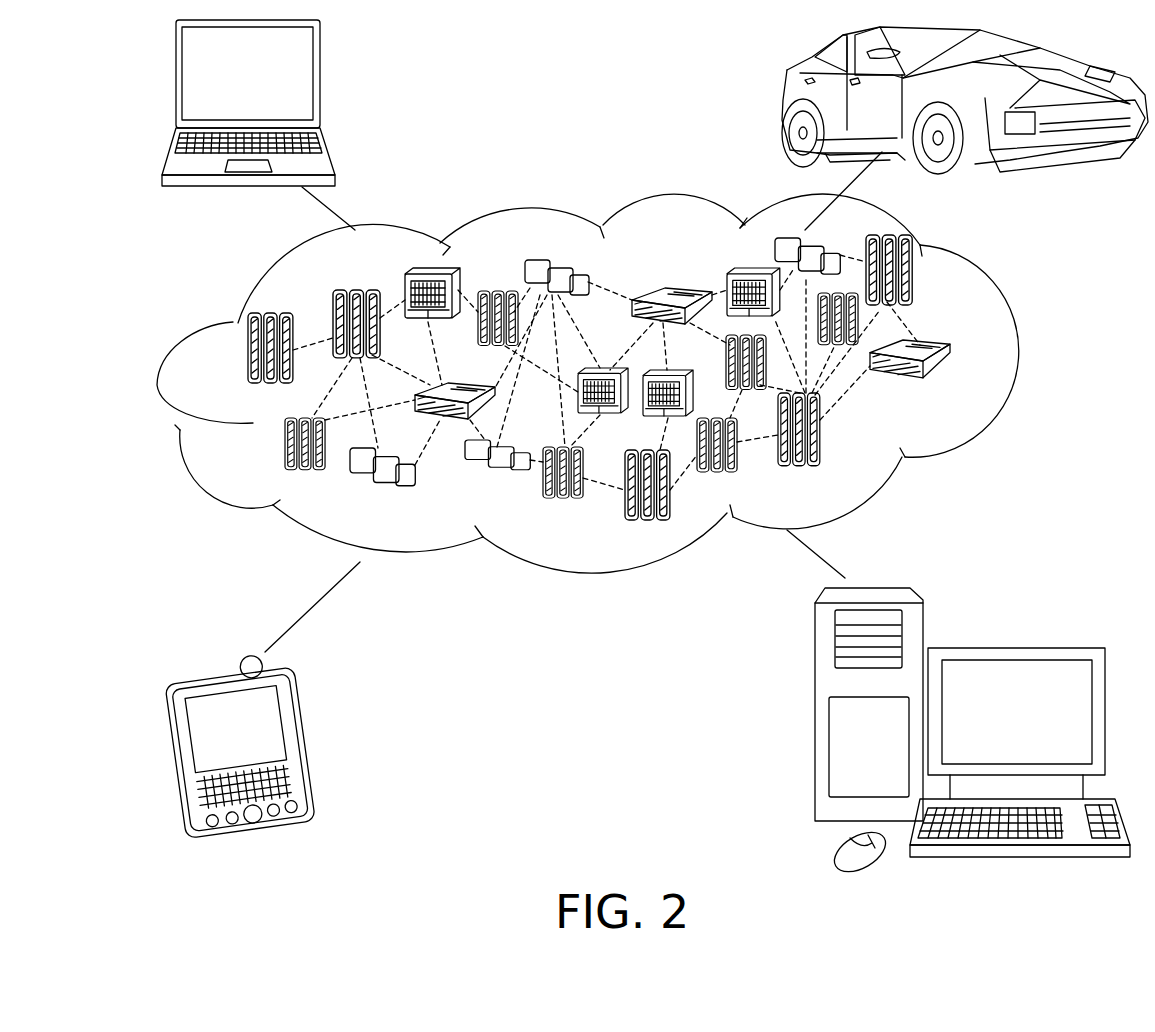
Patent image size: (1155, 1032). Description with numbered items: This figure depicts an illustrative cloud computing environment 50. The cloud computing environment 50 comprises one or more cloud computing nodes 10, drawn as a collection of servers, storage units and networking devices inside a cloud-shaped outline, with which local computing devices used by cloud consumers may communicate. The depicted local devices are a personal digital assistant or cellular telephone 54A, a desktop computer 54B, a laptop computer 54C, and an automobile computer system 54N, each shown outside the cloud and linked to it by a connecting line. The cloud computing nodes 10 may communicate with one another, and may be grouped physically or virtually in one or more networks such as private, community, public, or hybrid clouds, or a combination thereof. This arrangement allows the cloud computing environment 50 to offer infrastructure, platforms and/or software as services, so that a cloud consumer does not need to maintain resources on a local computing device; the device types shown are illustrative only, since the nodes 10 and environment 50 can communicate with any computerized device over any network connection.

The laptop computer 54C is at (320, 82).
The automobile computer system 54N is at (783, 100).
The personal digital assistant (PDA) or cellular telephone 54A is at (312, 743).
The desktop computer 54B is at (1015, 647).
The cloud computing environment 50 is at (1015, 358).
The cloud computing node 10 is at (953, 387).